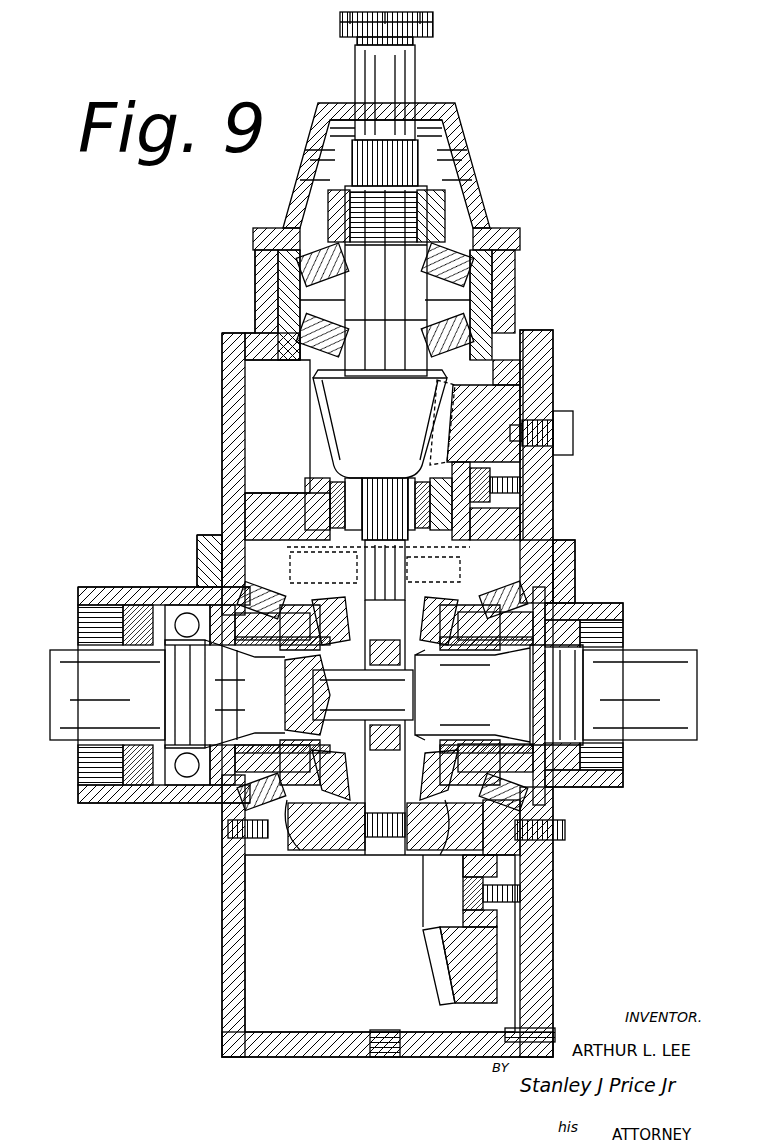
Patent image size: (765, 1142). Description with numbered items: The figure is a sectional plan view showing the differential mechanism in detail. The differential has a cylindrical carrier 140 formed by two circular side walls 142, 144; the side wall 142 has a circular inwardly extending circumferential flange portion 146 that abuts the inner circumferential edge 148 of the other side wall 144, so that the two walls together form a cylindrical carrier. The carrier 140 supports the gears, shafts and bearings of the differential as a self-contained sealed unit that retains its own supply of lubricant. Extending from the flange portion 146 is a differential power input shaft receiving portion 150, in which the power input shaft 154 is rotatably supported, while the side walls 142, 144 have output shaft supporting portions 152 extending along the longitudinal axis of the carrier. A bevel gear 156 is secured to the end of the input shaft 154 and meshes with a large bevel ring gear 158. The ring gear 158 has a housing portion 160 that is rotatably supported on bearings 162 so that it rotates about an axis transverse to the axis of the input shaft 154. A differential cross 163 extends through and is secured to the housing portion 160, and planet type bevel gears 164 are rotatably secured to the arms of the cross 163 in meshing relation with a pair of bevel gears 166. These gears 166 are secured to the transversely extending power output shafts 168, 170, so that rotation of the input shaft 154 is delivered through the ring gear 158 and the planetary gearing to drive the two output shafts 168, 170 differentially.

The cylindrical carrier 140 is at (350, 1060).
The side wall 142 is at (220, 395).
The side wall 144 is at (553, 390).
The circumferential flange portion 146 is at (325, 1057).
The inner circumferential edge 148 is at (520, 1048).
The input shaft receiving portion 150 is at (252, 243).
The output shaft supporting portions 152 is at (157, 583).
The power input shaft 154 is at (418, 82).
The bevel gear 156 is at (398, 438).
The bevel ring gear 158 is at (483, 378).
The housing portion 160 is at (347, 575).
The bearings 162 is at (245, 590).
The differential cross 163 is at (382, 832).
The planet type bevel gears 164 is at (410, 572).
The bevel gears 166 is at (302, 850).
The power output shaft 168 is at (693, 693).
The power output shaft 170 is at (92, 693).